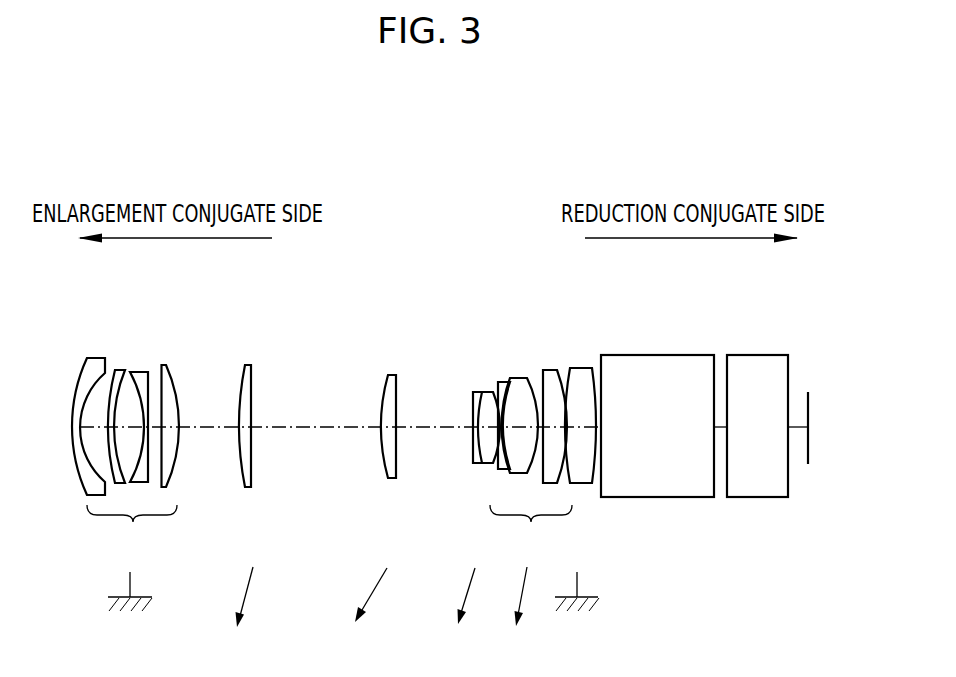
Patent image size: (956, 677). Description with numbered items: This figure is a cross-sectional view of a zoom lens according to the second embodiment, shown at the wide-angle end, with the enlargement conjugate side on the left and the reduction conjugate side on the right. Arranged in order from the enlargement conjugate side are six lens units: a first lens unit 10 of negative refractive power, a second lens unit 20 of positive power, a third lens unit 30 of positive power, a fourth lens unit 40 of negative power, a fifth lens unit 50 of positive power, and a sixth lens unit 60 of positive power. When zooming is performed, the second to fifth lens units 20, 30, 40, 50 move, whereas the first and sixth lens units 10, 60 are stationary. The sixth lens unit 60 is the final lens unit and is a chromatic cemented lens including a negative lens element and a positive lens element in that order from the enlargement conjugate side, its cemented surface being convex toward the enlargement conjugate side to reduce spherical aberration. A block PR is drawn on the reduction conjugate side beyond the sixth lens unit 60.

The first lens unit 10 is at (125, 484).
The second lens unit 20 is at (247, 484).
The third lens unit 30 is at (388, 478).
The fourth lens unit 40 is at (475, 465).
The fifth lens unit 50 is at (531, 502).
The sixth lens unit 60 is at (583, 488).
The prism PR is at (700, 487).